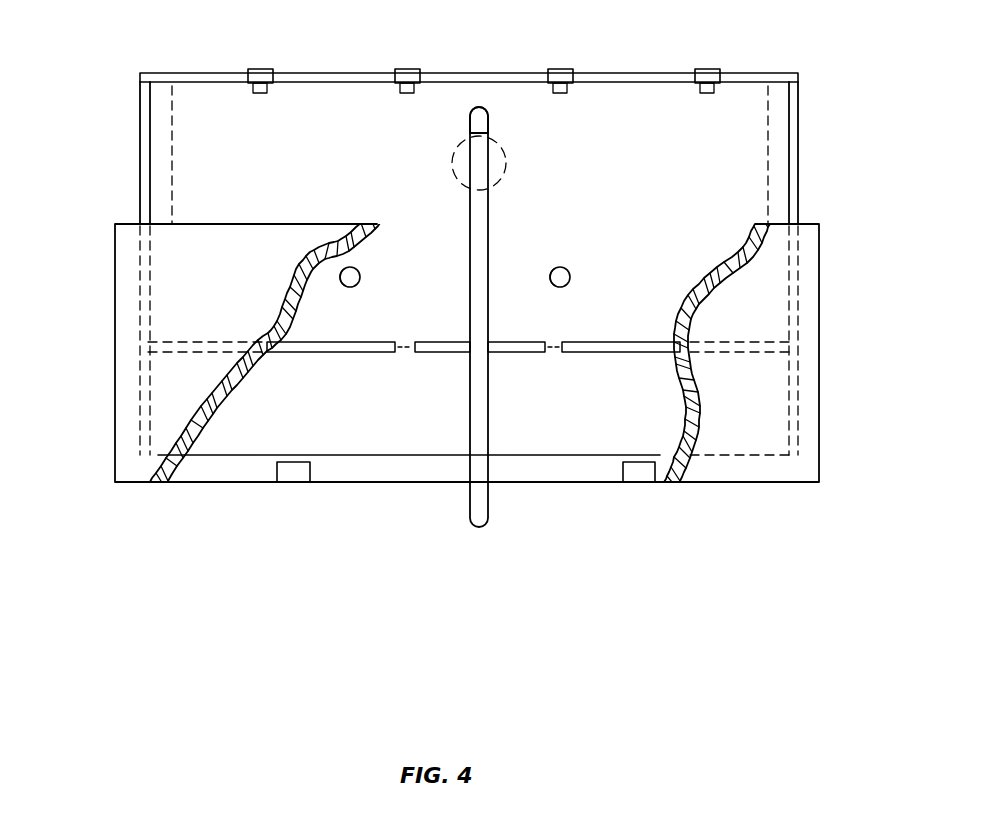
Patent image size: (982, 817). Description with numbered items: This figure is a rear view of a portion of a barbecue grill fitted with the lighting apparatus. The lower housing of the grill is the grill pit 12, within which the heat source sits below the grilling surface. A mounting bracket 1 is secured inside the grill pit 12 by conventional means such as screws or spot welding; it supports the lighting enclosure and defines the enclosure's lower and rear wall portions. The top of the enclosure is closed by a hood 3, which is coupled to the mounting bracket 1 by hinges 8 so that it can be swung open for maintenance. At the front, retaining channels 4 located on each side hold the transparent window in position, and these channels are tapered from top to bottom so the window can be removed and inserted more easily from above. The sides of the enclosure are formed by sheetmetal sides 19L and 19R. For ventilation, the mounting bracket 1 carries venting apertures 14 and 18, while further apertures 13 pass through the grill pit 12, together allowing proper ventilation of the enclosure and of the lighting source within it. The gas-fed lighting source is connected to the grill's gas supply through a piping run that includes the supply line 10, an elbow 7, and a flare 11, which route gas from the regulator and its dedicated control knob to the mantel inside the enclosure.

The mounting bracket 1 is at (299, 164).
The hood 3 is at (770, 66).
The retaining channels 4 is at (174, 167).
The elbow 7 is at (491, 113).
The hinges 8 is at (264, 67).
The supply line 10 is at (466, 506).
The flare 11 is at (506, 160).
The grill pit 12 is at (821, 329).
The apertures 13 is at (292, 487).
The venting apertures 14 is at (406, 362).
The venting apertures 18 is at (361, 275).
The side 19R is at (264, 353).
The side 19L is at (717, 353).